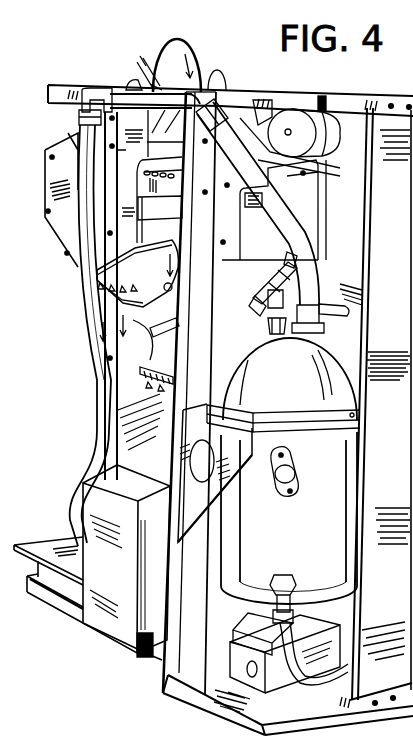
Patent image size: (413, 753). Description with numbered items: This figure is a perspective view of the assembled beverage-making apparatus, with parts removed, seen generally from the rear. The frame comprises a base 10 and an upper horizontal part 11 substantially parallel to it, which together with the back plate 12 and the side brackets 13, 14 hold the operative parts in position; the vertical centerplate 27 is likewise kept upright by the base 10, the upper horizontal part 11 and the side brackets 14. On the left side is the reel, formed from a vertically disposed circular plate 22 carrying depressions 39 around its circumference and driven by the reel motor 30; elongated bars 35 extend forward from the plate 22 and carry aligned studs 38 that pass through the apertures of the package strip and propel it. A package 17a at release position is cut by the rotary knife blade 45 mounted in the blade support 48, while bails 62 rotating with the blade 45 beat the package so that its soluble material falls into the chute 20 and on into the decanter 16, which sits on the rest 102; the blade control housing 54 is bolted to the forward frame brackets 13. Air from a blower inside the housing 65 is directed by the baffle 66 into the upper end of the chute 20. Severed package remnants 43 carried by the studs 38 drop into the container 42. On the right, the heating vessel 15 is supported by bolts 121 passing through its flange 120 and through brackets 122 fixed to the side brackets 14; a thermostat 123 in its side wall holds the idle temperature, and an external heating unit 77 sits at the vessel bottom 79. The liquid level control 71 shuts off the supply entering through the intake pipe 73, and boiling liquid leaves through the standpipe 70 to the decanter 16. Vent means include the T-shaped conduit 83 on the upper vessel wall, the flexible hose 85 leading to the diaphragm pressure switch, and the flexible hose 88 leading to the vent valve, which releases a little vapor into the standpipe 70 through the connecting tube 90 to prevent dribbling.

The base 10 is at (54, 598).
The upper horizontal part 11 is at (303, 100).
The back plate 12 is at (402, 277).
The side brackets 13 is at (104, 390).
The side brackets 14 is at (180, 574).
The vessel 15 is at (307, 529).
The decanter 16 is at (92, 470).
The package 17a is at (182, 168).
The chute 20 is at (170, 219).
The circular plate 22 is at (186, 230).
The centerplate 27 is at (242, 316).
The reel motor 30 is at (255, 273).
The elongated bars 35 is at (172, 300).
The studs 38 is at (110, 292).
The depressions 39 is at (175, 342).
The container 42 is at (117, 582).
The package remnants 43 is at (117, 305).
The rotary knife blade 45 is at (200, 58).
The blade support 48 is at (143, 58).
The blade control housing 54 is at (55, 238).
The bails 62 is at (137, 72).
The housing 65 is at (326, 118).
The baffle 66 is at (262, 114).
The standpipe 70 is at (86, 290).
The liquid level control 71 is at (336, 306).
The intake pipe 73 is at (306, 607).
The external heating unit 77 is at (340, 623).
The bottom 79 is at (244, 596).
The T-shaped conduit 83 is at (271, 311).
The flexible hose 85 is at (319, 248).
The flexible hose 88 is at (262, 276).
The connecting tube 90 is at (294, 228).
The rest 102 is at (52, 545).
The flange 120 is at (284, 424).
The bolts 121 is at (224, 408).
The brackets 122 is at (237, 466).
The thermostat 123 is at (286, 476).